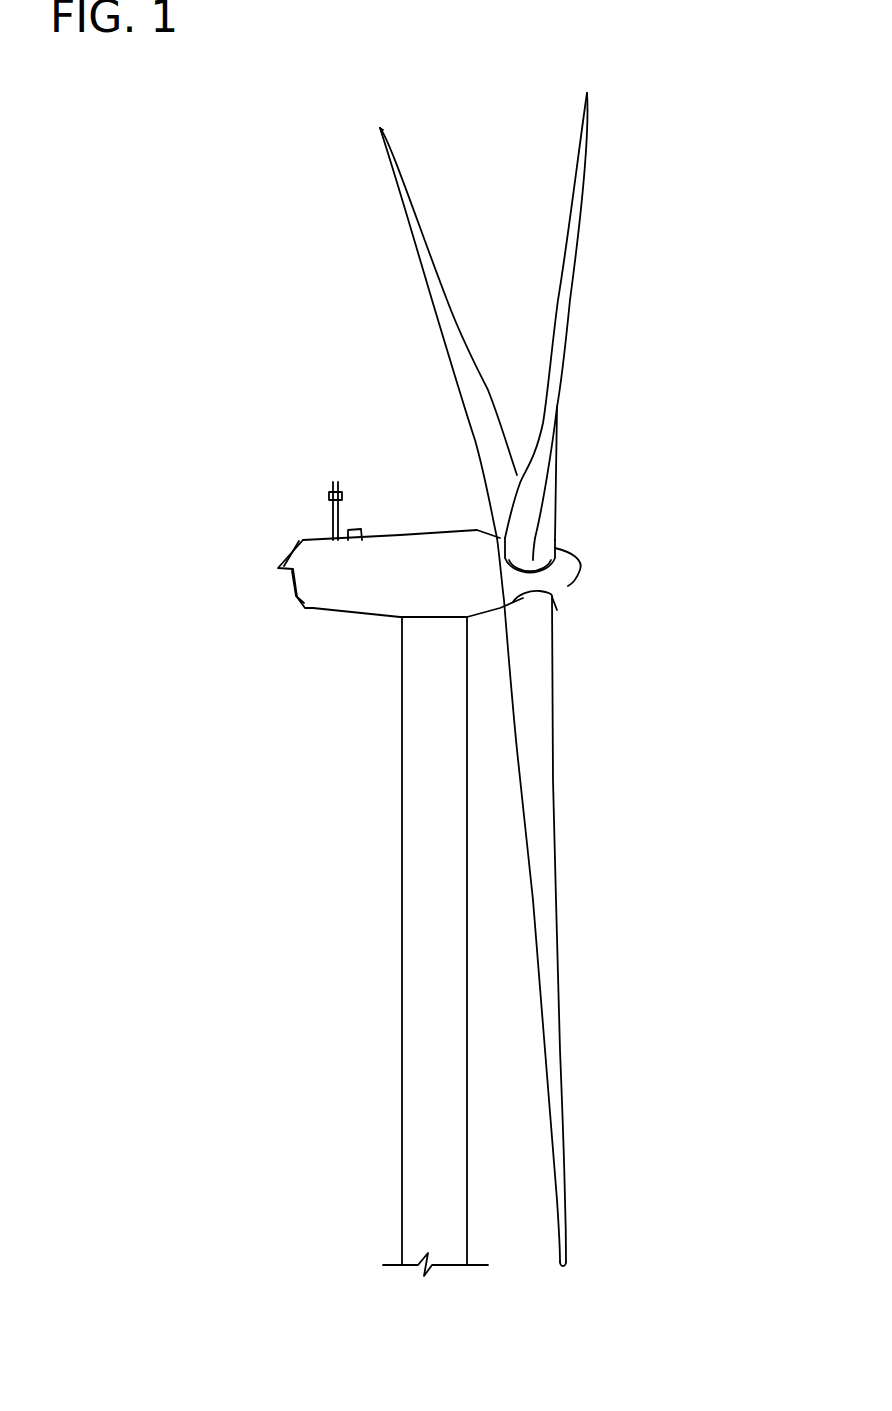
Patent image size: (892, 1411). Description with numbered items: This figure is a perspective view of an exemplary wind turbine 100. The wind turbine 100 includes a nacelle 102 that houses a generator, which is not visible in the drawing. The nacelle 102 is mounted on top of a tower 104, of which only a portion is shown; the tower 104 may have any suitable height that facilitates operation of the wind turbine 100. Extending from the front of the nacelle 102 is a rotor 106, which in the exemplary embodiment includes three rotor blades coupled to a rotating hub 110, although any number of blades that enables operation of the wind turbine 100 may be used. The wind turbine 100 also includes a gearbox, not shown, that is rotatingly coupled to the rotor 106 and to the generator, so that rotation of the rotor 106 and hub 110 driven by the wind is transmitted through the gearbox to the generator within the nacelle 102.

The wind turbine 100 is at (262, 171).
The nacelle 102 is at (335, 610).
The tower 104 is at (403, 892).
The rotor 106 is at (634, 308).
The rotating hub 110 is at (570, 585).